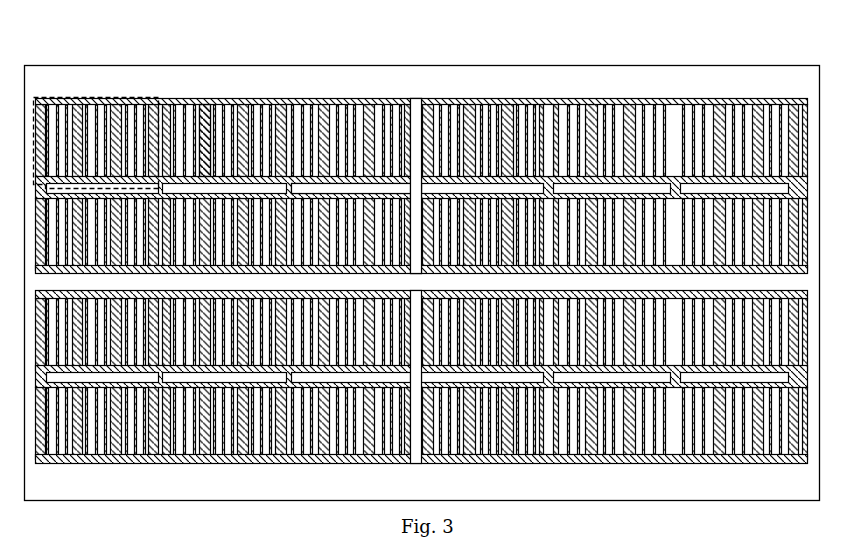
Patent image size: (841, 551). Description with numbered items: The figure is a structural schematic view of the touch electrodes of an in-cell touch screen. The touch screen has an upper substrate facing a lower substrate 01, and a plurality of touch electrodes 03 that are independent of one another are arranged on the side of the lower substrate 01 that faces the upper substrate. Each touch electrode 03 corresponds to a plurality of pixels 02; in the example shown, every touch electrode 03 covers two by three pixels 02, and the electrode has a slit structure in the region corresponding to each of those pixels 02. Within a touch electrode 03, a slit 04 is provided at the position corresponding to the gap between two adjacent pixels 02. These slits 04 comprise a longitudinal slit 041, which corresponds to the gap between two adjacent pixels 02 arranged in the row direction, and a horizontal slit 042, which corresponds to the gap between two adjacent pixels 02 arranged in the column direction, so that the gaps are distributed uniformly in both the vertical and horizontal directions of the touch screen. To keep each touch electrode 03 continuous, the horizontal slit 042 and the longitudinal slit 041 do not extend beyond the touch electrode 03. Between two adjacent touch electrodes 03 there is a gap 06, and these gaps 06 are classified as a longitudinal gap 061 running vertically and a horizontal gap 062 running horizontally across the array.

The lower substrate 01 is at (649, 65).
The pixel 02 is at (108, 97).
The touch electrode 03 is at (192, 103).
The slit 04 is at (347, 98).
The longitudinal slit 041 is at (283, 125).
The horizontal slit 042 is at (383, 185).
The gap 06 is at (482, 139).
The longitudinal gap 061 is at (417, 145).
The horizontal gap 062 is at (547, 275).